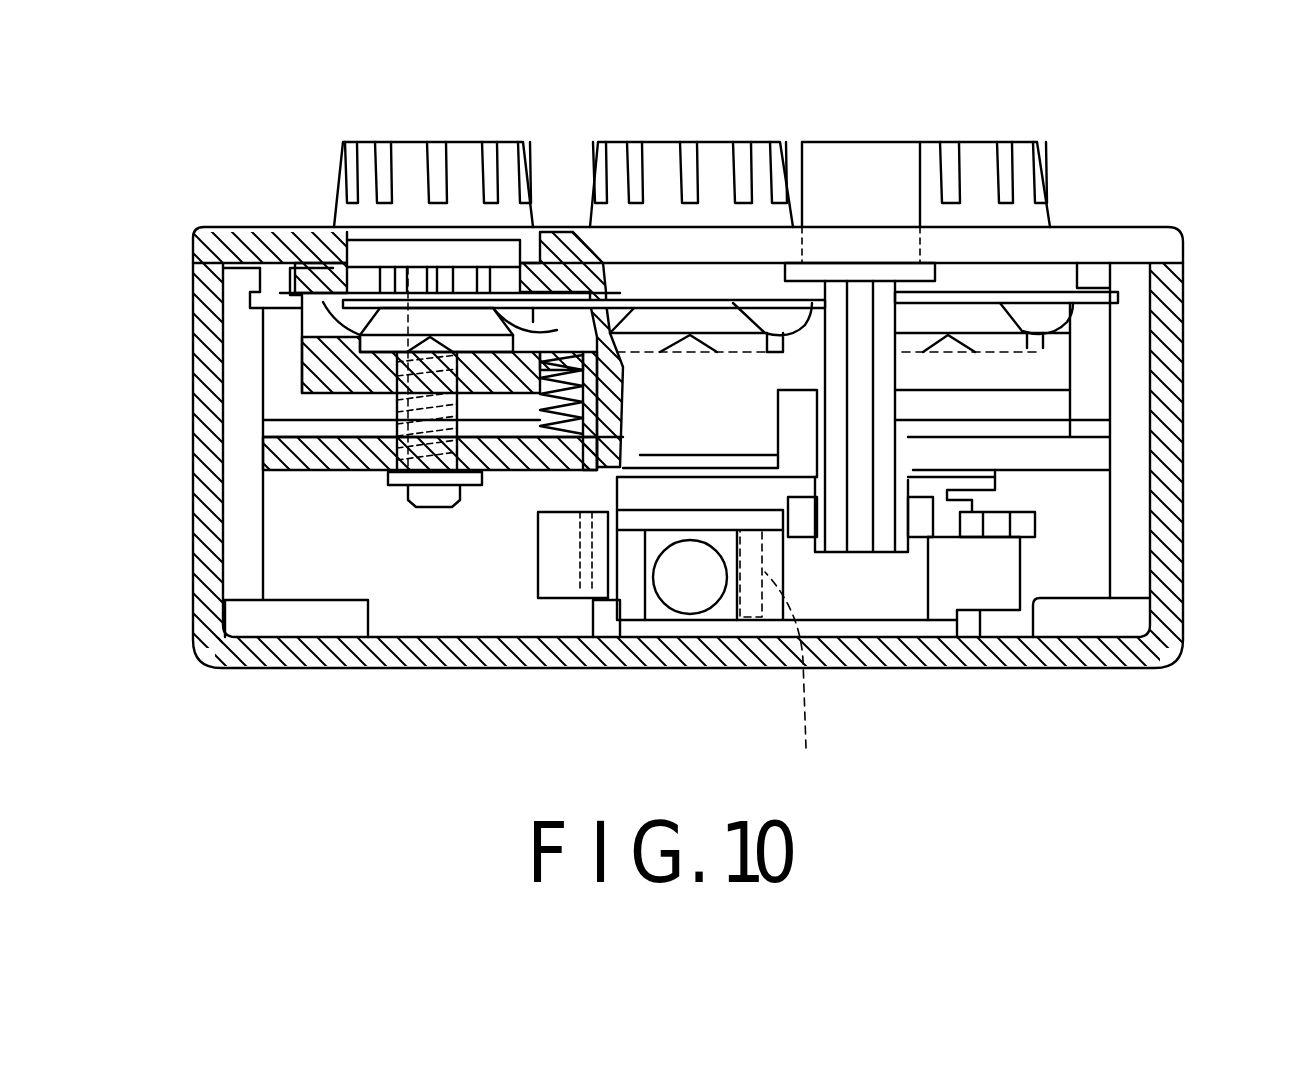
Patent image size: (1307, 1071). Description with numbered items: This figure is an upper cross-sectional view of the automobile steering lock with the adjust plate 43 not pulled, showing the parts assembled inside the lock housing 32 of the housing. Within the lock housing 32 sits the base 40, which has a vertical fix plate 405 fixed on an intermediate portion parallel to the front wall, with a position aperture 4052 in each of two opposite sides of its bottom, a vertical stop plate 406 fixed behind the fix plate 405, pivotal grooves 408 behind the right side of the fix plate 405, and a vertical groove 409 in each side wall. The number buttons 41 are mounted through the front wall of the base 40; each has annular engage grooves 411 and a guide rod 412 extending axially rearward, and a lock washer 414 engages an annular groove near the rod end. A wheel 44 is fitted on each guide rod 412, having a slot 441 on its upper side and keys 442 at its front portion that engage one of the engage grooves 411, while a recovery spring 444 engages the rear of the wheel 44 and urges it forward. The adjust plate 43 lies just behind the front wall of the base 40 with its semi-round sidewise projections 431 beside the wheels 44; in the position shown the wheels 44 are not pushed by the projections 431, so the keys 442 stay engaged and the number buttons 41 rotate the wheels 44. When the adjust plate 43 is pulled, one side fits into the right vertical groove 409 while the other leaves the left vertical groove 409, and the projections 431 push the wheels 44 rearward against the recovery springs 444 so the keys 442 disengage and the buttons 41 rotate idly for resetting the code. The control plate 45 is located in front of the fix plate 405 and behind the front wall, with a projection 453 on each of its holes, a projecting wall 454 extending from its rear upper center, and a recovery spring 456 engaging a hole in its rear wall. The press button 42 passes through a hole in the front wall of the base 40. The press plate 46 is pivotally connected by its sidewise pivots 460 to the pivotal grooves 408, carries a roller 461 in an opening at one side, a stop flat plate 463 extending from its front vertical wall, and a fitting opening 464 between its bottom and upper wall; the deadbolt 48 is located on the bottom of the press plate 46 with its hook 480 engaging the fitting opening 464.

The lock housing 32 is at (275, 650).
The base 40 is at (1163, 242).
The number button 41 is at (410, 127).
The press button 42 is at (855, 157).
The adjust plate 43 is at (360, 320).
The wheel 44 is at (352, 298).
The control plate 45 is at (1047, 372).
The press plate 46 is at (830, 602).
The deadbolt 48 is at (688, 595).
The vertical fix plate 405 is at (1070, 453).
The vertical stop plate 406 is at (593, 660).
The pivotal groove 408 is at (1093, 668).
The vertical groove 409 is at (252, 300).
The engage groove 411 is at (392, 268).
The guide rod 412 is at (437, 490).
The lock washer 414 is at (393, 475).
The semi-round sidewise projection 431 is at (562, 292).
The slot 441 is at (493, 285).
The key 442 is at (360, 292).
The recovery spring 444 is at (428, 470).
The projection 453 is at (457, 335).
The projecting wall 454 is at (632, 437).
The recovery spring 456 is at (545, 408).
The sidewise pivot 460 is at (997, 627).
The roller 461 is at (900, 537).
The stop flat plate 463 is at (648, 493).
The fitting opening 464 is at (802, 677).
The hook 480 is at (723, 603).
The position aperture 4052 is at (273, 412).